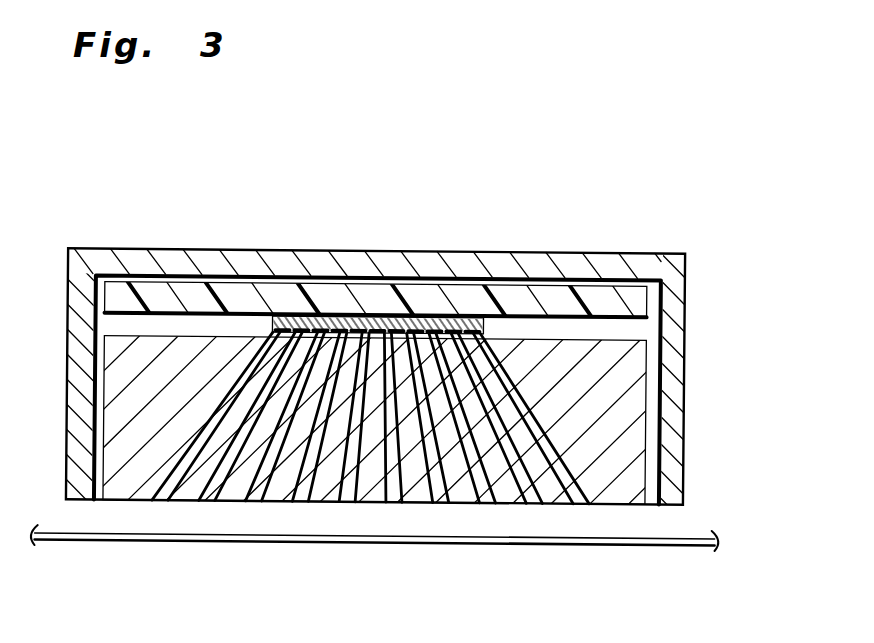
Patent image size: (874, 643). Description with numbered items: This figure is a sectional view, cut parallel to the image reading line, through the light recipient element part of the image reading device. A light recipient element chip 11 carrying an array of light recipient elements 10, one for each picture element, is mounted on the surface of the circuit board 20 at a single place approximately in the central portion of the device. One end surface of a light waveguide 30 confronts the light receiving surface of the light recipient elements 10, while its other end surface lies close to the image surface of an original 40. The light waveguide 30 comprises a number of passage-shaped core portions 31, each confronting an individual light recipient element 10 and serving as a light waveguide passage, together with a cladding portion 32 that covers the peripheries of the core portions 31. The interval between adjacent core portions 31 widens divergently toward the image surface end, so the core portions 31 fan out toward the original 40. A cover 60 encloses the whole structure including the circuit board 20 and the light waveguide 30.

The light recipient element 10 is at (362, 318).
The light recipient element chip 11 is at (437, 322).
The circuit board 20 is at (207, 300).
The light waveguide 30 is at (655, 397).
The core portions 31 is at (568, 478).
The cladding portion 32 is at (630, 453).
The original 40 is at (677, 538).
The cover 60 is at (602, 253).